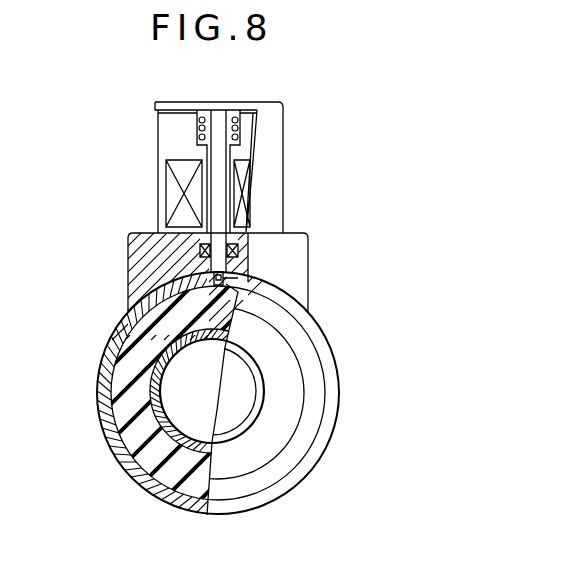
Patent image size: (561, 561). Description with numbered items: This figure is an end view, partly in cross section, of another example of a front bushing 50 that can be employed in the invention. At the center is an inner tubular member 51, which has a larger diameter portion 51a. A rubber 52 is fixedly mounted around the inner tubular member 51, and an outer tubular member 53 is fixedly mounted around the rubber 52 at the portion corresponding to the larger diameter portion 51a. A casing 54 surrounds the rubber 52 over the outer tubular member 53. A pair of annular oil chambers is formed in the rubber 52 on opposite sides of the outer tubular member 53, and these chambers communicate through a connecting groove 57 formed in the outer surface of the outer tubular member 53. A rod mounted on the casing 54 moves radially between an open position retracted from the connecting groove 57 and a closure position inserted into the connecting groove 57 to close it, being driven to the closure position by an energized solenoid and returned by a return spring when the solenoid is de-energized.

The connecting groove 57 is at (208, 275).
The front bushing 50 is at (288, 490).
The inner tubular member 51 is at (257, 415).
The larger diameter portion 51a is at (163, 407).
The rubber 52 is at (165, 470).
The outer tubular member 53 is at (190, 498).
The casing 54 is at (317, 316).